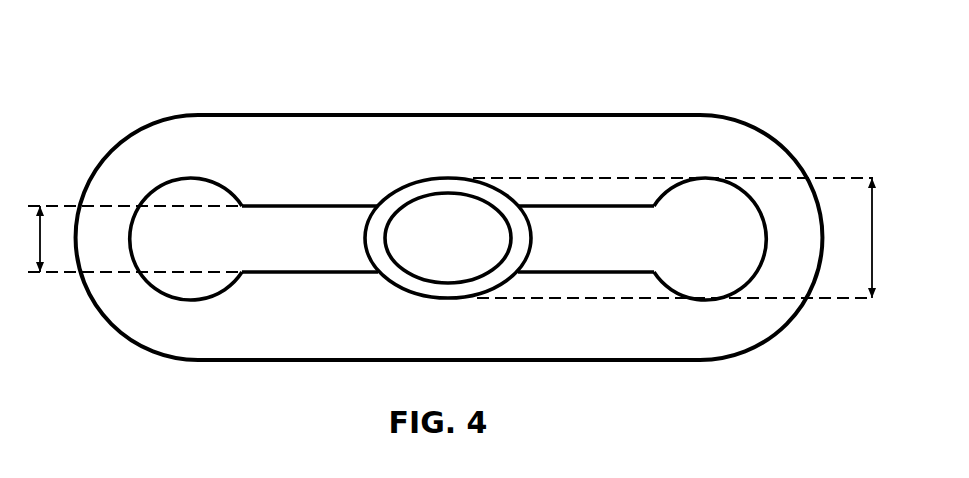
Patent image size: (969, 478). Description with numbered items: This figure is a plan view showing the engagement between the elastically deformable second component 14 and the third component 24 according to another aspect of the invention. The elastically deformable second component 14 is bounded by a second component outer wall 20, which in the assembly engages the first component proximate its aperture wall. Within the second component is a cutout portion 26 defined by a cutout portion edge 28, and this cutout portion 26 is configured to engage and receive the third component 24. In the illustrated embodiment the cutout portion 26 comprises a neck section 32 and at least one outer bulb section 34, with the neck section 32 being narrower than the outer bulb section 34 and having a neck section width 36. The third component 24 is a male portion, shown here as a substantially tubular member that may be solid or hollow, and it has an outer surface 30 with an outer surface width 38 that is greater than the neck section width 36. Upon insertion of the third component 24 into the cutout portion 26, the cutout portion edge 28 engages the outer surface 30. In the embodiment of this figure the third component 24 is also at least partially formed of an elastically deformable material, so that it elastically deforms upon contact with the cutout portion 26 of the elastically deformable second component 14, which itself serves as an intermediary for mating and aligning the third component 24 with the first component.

The elastically deformable second component 14 is at (221, 384).
The second component outer wall 20 is at (228, 115).
The third component 24 is at (423, 170).
The cutout portion 26 is at (618, 275).
The cutout portion edge 28 is at (765, 220).
The outer surface 30 is at (448, 177).
The neck section 32 is at (320, 232).
The outer bulb section 34 is at (186, 224).
The neck section width 36 is at (133, 239).
The outer surface width 38 is at (680, 238).